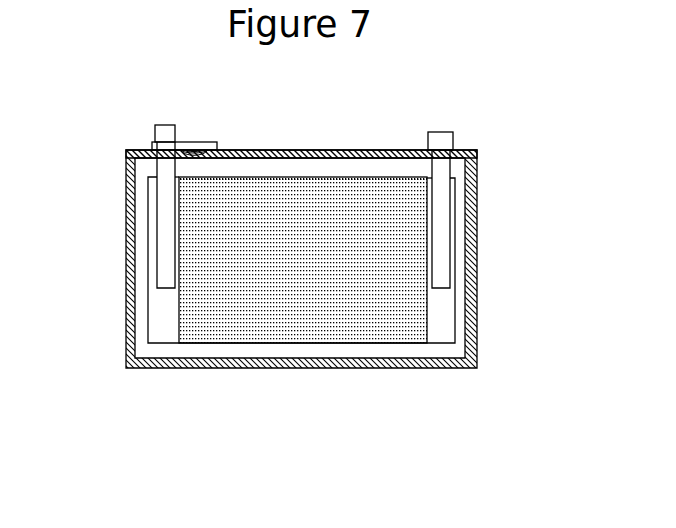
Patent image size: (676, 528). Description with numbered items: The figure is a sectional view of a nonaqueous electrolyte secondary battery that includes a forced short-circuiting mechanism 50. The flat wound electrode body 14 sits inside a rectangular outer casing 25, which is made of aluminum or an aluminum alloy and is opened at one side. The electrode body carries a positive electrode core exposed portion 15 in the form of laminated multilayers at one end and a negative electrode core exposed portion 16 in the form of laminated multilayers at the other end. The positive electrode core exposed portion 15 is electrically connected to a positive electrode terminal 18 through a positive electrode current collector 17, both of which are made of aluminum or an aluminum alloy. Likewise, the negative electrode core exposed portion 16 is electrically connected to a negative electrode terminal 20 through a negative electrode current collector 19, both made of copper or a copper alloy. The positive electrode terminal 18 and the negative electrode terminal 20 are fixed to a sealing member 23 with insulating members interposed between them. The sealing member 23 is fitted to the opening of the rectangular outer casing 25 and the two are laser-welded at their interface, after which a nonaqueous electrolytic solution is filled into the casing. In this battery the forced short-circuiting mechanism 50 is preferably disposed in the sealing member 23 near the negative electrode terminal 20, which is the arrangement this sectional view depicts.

The flat wound electrode body 14 is at (255, 318).
The positive electrode core exposed portion 15 is at (442, 307).
The negative electrode core exposed portion 16 is at (165, 325).
The positive electrode current collector 17 is at (442, 193).
The positive electrode terminal 18 is at (453, 132).
The negative electrode current collector 19 is at (165, 215).
The negative electrode terminal 20 is at (167, 132).
The sealing member 23 is at (337, 150).
The rectangular outer casing 25 is at (128, 288).
The forced short-circuiting mechanism 50 is at (192, 132).